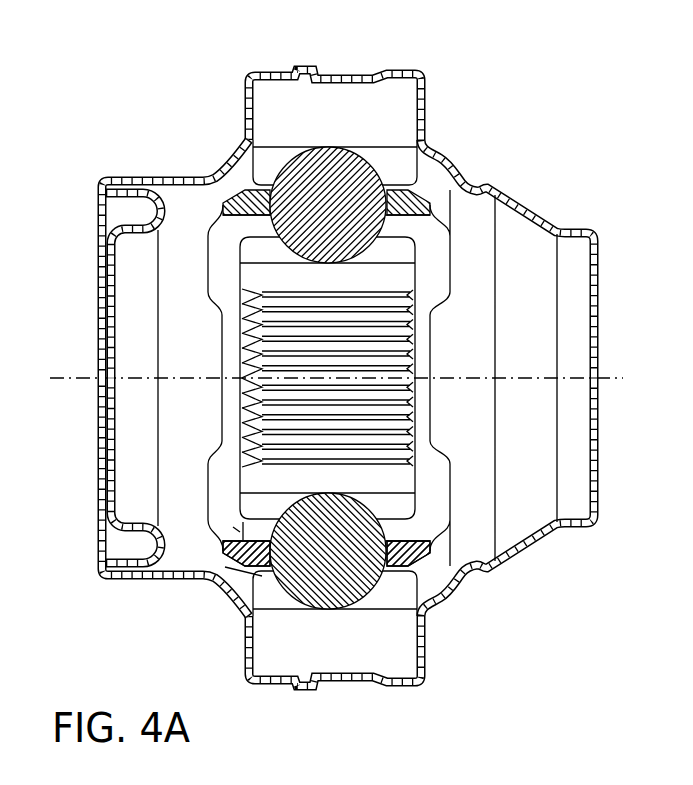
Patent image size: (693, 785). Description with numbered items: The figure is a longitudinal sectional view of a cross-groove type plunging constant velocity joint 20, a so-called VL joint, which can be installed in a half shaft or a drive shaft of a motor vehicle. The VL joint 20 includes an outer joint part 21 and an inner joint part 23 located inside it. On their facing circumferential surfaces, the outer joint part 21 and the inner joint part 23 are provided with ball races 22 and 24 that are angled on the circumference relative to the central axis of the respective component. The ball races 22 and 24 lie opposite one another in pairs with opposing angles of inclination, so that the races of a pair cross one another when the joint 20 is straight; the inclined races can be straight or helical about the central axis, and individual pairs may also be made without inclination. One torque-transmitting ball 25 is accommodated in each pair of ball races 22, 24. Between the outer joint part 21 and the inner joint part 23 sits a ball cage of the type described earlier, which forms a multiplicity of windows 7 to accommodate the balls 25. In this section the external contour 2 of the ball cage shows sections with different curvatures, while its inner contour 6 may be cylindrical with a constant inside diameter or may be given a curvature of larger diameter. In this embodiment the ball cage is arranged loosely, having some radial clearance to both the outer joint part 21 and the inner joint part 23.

The plunging constant velocity joint 20 is at (336, 360).
The outer joint part 21 is at (393, 106).
The ball race 22 is at (393, 148).
The inner joint part 23 is at (398, 277).
The ball race 24 is at (385, 263).
The torque-transmitting ball 25 is at (310, 193).
The external contour 2 is at (258, 565).
The inner contour 6 is at (235, 528).
The window 7 is at (387, 548).